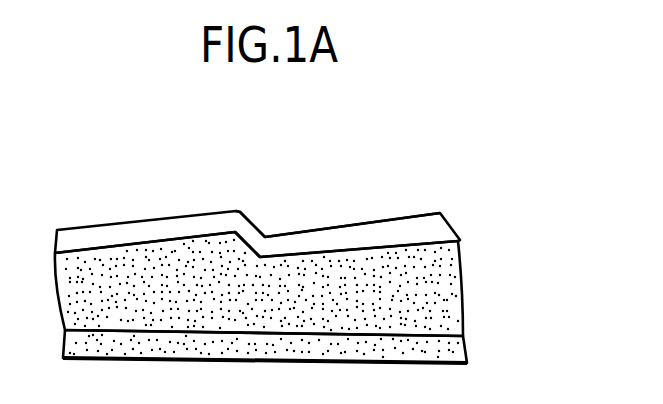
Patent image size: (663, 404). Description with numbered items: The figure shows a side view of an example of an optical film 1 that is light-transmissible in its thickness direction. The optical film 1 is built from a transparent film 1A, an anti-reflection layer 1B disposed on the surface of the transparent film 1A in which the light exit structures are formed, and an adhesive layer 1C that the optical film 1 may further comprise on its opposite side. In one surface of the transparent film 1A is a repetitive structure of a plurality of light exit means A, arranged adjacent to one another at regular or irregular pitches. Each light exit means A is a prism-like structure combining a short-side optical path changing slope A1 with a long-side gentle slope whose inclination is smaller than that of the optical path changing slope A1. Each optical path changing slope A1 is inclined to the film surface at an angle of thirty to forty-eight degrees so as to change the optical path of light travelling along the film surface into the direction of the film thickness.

The optical film 1 is at (325, 248).
The transparent film 1A is at (460, 290).
The anti-reflection layer 1B is at (460, 243).
The adhesive layer 1C is at (303, 348).
The light exit means A is at (445, 205).
The optical path changing slope A1 is at (249, 218).